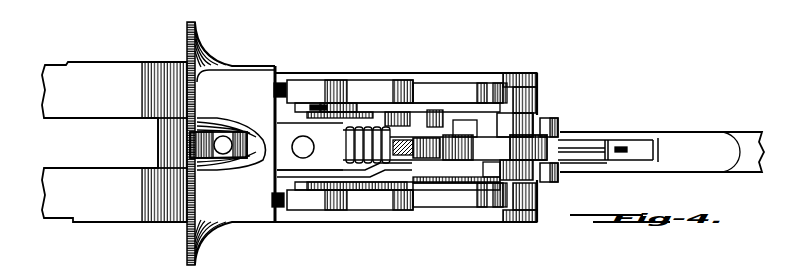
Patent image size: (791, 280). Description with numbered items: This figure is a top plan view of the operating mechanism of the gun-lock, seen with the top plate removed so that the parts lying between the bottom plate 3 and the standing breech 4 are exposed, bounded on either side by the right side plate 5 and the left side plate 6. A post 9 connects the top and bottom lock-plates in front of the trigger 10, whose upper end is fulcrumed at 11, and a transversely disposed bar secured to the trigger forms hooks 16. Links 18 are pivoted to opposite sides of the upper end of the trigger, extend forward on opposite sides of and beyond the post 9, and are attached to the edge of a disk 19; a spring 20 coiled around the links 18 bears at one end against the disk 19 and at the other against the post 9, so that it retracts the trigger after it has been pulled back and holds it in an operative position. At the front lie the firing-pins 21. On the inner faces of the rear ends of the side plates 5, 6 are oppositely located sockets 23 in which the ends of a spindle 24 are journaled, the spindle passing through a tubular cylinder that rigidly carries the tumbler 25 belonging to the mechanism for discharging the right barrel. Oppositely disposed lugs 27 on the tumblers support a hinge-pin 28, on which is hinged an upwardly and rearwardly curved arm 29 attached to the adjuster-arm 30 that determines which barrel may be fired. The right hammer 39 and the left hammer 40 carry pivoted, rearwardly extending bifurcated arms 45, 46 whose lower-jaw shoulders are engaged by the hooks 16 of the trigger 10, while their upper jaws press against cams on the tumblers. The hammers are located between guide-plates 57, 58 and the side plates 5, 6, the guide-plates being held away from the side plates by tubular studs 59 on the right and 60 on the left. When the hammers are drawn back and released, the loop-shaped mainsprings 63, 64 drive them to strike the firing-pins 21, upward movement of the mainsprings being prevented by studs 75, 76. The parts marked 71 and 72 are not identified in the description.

The bottom plate 3 is at (692, 148).
The standing breech 4 is at (186, 46).
The right side plate 5 is at (378, 77).
The left side plate 6 is at (412, 212).
The post 9 is at (400, 160).
The trigger 10 is at (466, 149).
The fulcrum 11 is at (460, 200).
The hooks 16 is at (350, 200).
The links 18 is at (458, 147).
The disk 19 is at (345, 157).
The spring 20 is at (355, 144).
The firing-pins 21 is at (283, 82).
The sockets 23 is at (538, 100).
The spindle 24 is at (541, 113).
The tumbler 25 is at (510, 118).
The lugs 27 is at (600, 147).
The hinge-pin 28 is at (560, 179).
The curved arm 29 is at (560, 161).
The adjuster-arm 30 is at (607, 140).
The right hammer 39 is at (323, 90).
The left hammer 40 is at (333, 180).
The bifurcated arm 45 is at (347, 119).
The bifurcated arm 46 is at (330, 176).
The guide-plate 57 is at (370, 91).
The guide-plate 58 is at (350, 192).
The tubular stud 59 is at (402, 84).
The tubular stud 60 is at (400, 200).
The mainspring 63 is at (428, 80).
The mainspring 64 is at (384, 206).
The wall 71 is at (451, 77).
The wall 72 is at (462, 213).
The stud 75 is at (511, 75).
The stud 76 is at (511, 214).